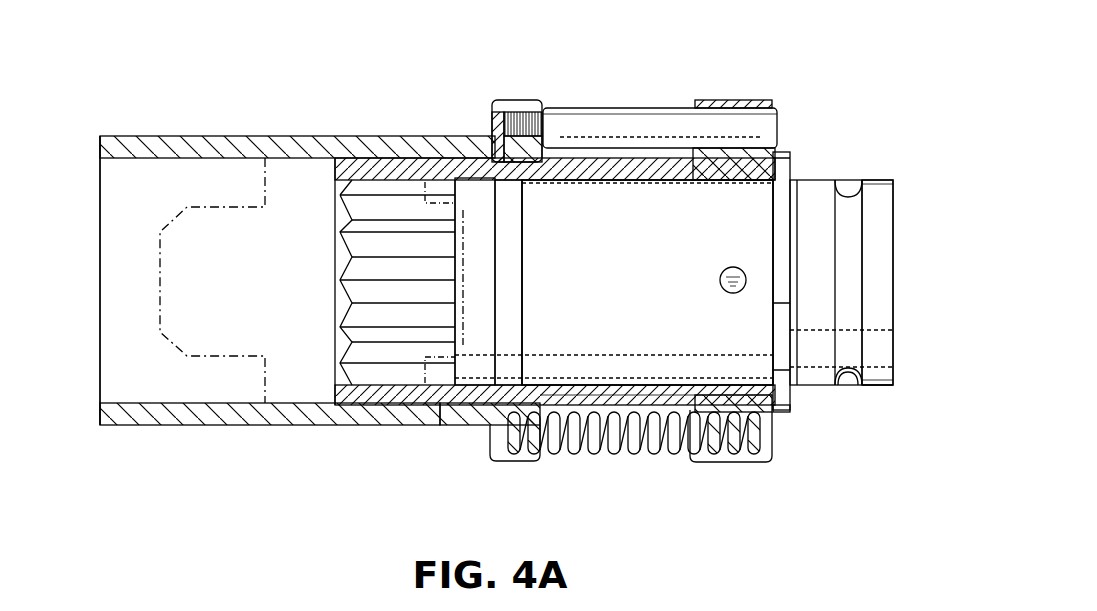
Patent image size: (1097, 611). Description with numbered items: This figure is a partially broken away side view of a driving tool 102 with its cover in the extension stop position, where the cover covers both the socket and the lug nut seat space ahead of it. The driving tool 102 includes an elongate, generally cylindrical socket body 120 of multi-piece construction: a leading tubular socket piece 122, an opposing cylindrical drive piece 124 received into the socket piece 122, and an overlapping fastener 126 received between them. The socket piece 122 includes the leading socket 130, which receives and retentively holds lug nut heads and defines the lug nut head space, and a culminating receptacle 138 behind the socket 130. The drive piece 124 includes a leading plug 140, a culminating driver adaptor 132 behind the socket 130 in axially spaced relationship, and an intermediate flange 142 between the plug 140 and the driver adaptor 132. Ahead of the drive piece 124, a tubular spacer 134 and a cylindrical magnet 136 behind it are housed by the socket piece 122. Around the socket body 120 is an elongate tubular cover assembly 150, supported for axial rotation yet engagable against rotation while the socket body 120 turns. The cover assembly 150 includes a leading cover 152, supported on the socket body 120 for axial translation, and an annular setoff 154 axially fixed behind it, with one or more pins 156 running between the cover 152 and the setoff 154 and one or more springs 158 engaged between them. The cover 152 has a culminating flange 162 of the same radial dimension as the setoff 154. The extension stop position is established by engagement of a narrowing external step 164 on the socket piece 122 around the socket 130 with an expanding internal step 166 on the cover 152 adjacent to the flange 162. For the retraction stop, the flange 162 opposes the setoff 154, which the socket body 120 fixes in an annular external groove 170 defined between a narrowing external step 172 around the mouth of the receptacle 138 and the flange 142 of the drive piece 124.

The driving tool 102 is at (294, 133).
The socket body 120 is at (895, 193).
The socket piece 122 is at (336, 175).
The drive piece 124 is at (895, 243).
The fastener 126 is at (728, 270).
The socket 130 is at (410, 406).
The driver adaptor 132 is at (880, 386).
The spacer 134 is at (497, 312).
The magnet 136 is at (524, 331).
The receptacle 138 is at (700, 460).
The plug 140 is at (621, 453).
The flange 142 is at (783, 413).
The cover assembly 150 is at (378, 134).
The cover 152 is at (100, 140).
The setoff 154 is at (775, 100).
The pin 156 is at (682, 108).
The spring 158 is at (633, 396).
The flange 162 is at (512, 98).
The external step 164 is at (468, 140).
The internal step 166 is at (647, 282).
The groove 170 is at (744, 158).
The external step 172 is at (698, 158).